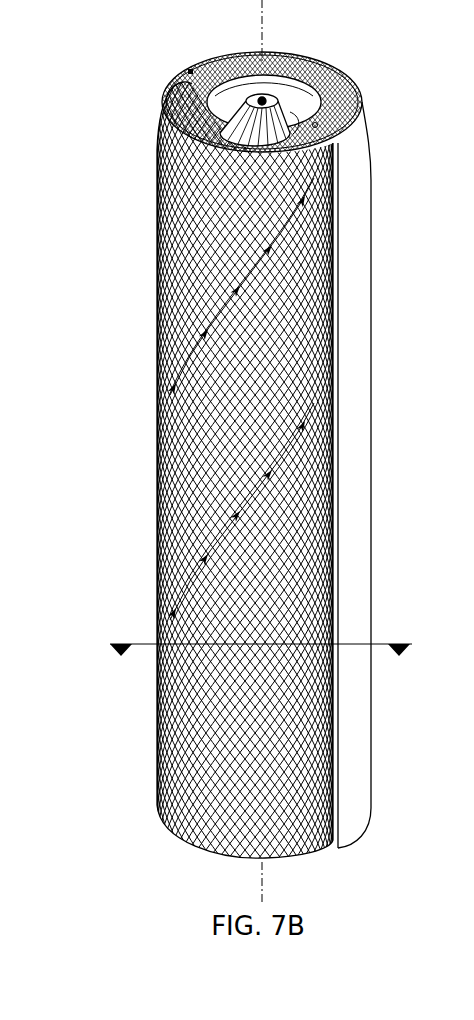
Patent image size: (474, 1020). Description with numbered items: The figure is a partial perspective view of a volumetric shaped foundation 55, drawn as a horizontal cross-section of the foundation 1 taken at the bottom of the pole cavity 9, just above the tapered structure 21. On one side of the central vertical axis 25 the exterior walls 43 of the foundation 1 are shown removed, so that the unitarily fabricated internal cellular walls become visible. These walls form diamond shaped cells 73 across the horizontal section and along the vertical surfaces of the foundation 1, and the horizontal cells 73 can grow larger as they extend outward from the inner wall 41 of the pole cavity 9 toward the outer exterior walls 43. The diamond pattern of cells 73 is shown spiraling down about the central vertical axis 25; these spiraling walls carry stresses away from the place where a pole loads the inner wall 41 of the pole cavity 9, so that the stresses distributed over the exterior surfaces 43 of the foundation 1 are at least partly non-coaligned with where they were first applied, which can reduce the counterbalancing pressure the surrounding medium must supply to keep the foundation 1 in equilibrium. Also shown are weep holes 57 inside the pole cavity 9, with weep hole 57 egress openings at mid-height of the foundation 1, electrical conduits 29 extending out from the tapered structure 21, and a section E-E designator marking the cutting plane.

The foundation 1 is at (120, 93).
The pole cavity 9 is at (347, 80).
The tapered structure 21 is at (162, 125).
The central vertical axis 25 is at (263, 31).
The electrical conduits 29 is at (255, 97).
The inner wall 41 is at (330, 82).
The exterior walls 43 is at (362, 291).
The volumetric shaped foundation 55 is at (155, 507).
The weep holes 57 is at (357, 111).
The diamond shaped cells 73 is at (191, 71).